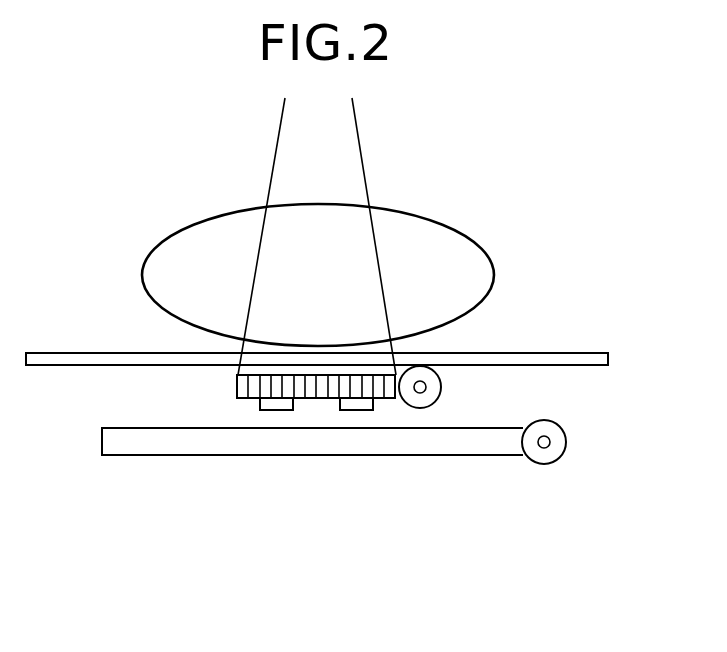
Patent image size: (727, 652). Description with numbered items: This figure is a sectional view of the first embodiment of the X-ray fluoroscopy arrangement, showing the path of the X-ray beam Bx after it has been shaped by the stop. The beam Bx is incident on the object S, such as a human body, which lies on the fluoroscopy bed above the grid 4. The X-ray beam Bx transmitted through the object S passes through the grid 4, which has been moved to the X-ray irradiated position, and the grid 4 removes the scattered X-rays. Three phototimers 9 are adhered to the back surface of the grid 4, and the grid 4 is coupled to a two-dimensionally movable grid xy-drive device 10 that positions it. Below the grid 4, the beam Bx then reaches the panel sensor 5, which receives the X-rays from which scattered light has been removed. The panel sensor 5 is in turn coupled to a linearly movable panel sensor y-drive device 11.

The X-ray beam Bx is at (363, 158).
The object S is at (480, 267).
The grid 4 is at (238, 386).
The phototimers 9 is at (280, 408).
The grid xy-drive device 10 is at (438, 383).
The panel sensor 5 is at (110, 443).
The panel sensor y-drive device 11 is at (562, 438).